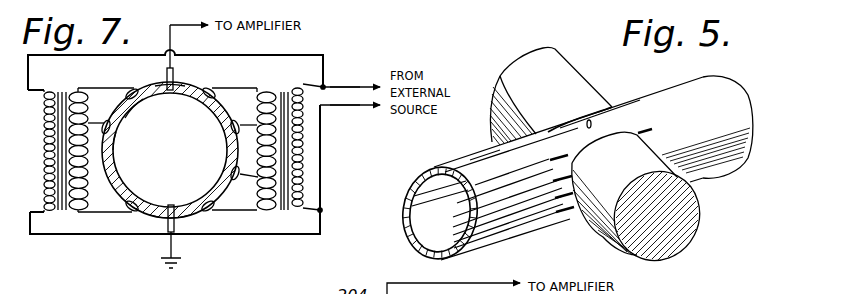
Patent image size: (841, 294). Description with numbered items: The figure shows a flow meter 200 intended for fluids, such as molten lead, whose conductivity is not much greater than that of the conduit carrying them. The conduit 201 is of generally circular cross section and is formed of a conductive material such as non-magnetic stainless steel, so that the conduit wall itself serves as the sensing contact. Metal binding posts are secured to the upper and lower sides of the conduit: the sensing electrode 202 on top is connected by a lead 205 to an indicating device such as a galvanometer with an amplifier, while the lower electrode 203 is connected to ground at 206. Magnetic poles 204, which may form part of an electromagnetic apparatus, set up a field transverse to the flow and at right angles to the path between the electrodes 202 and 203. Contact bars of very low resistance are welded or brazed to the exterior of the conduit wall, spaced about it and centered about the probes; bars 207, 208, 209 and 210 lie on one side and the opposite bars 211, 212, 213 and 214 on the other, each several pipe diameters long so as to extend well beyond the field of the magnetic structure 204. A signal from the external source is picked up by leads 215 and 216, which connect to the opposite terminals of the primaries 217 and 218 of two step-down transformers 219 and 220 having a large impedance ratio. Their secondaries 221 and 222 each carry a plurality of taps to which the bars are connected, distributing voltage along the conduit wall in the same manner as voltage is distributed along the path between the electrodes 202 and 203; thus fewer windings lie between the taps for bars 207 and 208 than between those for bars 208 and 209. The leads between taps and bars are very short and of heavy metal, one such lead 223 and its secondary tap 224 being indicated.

In FIG. 6, the flow meter 200 is at (338, 65).
In FIG. 5, the flow meter 200 is at (490, 150).
In FIG. 6, the conduit 201 is at (196, 216).
In FIG. 5, the conduit 201 is at (456, 169).
In FIG. 6, the sensing electrode 202 is at (181, 82).
In FIG. 5, the sensing electrode 202 is at (592, 122).
In FIG. 6, the lower electrode 203 is at (170, 227).
In FIG. 5, the magnetic poles 204 is at (548, 99).
In FIG. 6, the lead 205 is at (172, 25).
In FIG. 6, the ground 206 is at (165, 259).
In FIG. 6, the contact bar 207 is at (211, 87).
In FIG. 5, the contact bar 207 is at (556, 153).
In FIG. 6, the contact bar 208 is at (237, 121).
In FIG. 5, the contact bar 208 is at (560, 179).
In FIG. 6, the contact bar 209 is at (240, 177).
In FIG. 5, the contact bar 209 is at (557, 198).
In FIG. 6, the contact bar 210 is at (213, 212).
In FIG. 5, the contact bar 210 is at (553, 213).
In FIG. 6, the contact bar 211 is at (128, 88).
In FIG. 6, the contact bar 212 is at (105, 122).
In FIG. 6, the contact bar 213 is at (121, 147).
In FIG. 6, the contact bar 214 is at (120, 211).
In FIG. 6, the lead 215 is at (350, 83).
In FIG. 6, the lead 216 is at (370, 105).
In FIG. 6, the primary 217 is at (299, 87).
In FIG. 6, the primary 218 is at (44, 158).
In FIG. 6, the step-down transformer 219 is at (288, 222).
In FIG. 6, the step-down transformer 220 is at (58, 222).
In FIG. 6, the secondary 221 is at (264, 88).
In FIG. 6, the secondary 222 is at (84, 89).
In FIG. 6, the lead 223 is at (132, 113).
In FIG. 6, the tap 224 is at (89, 88).